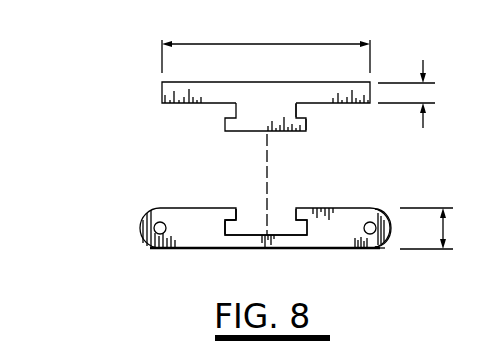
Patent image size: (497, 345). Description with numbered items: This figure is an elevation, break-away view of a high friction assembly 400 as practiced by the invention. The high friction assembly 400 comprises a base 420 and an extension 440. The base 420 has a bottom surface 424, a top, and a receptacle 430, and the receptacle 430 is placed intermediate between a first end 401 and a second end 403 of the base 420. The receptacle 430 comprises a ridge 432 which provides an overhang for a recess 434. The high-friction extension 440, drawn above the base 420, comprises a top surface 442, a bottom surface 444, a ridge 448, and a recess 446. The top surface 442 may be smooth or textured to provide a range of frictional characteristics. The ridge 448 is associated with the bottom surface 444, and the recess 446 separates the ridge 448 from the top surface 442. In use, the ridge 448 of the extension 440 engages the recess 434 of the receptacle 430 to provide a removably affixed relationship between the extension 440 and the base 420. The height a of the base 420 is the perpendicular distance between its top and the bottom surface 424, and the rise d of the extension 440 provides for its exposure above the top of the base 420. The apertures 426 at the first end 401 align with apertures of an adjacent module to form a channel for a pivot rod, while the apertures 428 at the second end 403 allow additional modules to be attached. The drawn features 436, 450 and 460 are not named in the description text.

The high friction assembly 400 is at (138, 268).
The first end 401 is at (141, 217).
The second end 403 is at (397, 214).
The base 420 is at (355, 258).
The bottom surface 424 is at (283, 249).
The apertures 426 is at (172, 248).
The apertures 428 is at (374, 222).
The receptacle 430 is at (281, 210).
The ridge 432 is at (236, 207).
The recess 434 is at (237, 218).
The slot lower side wall 436 is at (233, 233).
The extension 440 is at (150, 93).
The top surface 442 is at (218, 82).
The bottom surface 444 is at (252, 131).
The recess 446 is at (297, 110).
The ridge 448 is at (307, 127).
The mounting hole 450 is at (138, 228).
The base bottom edge 460 is at (383, 249).